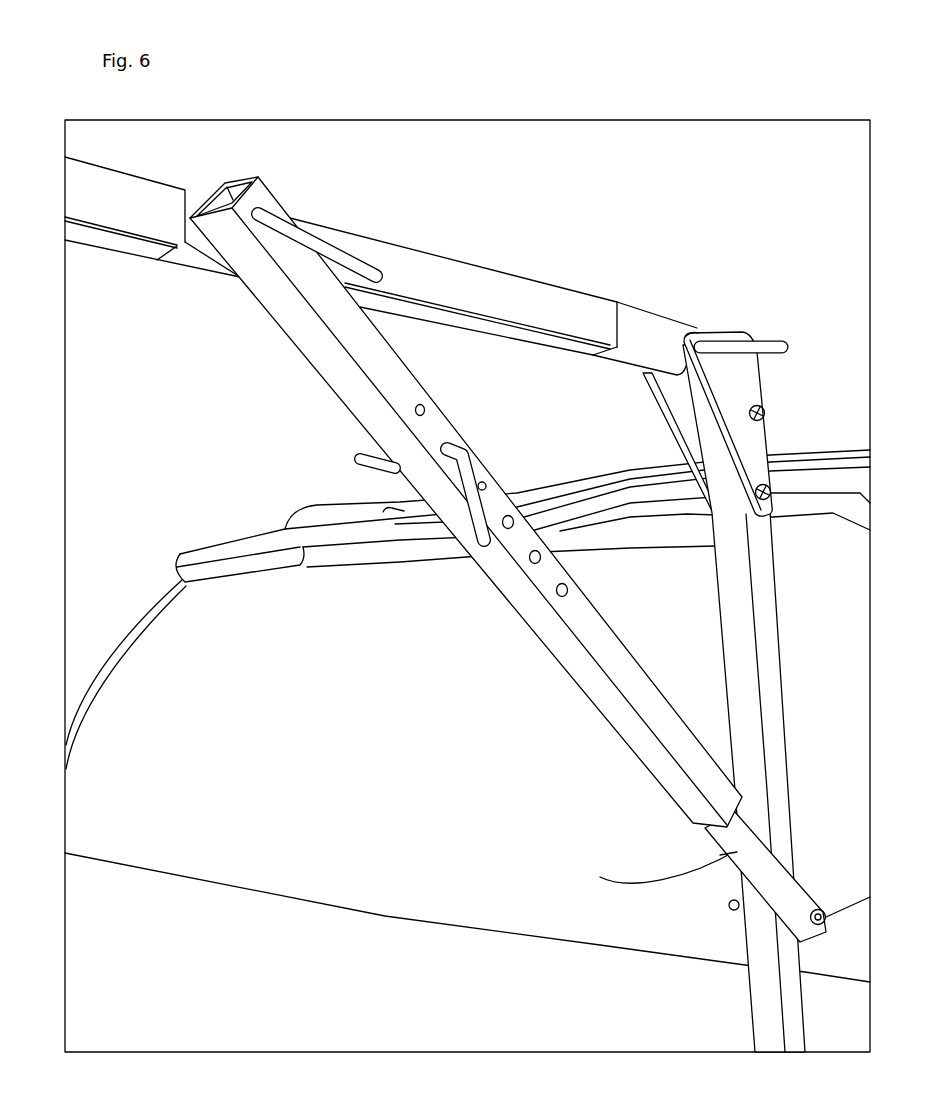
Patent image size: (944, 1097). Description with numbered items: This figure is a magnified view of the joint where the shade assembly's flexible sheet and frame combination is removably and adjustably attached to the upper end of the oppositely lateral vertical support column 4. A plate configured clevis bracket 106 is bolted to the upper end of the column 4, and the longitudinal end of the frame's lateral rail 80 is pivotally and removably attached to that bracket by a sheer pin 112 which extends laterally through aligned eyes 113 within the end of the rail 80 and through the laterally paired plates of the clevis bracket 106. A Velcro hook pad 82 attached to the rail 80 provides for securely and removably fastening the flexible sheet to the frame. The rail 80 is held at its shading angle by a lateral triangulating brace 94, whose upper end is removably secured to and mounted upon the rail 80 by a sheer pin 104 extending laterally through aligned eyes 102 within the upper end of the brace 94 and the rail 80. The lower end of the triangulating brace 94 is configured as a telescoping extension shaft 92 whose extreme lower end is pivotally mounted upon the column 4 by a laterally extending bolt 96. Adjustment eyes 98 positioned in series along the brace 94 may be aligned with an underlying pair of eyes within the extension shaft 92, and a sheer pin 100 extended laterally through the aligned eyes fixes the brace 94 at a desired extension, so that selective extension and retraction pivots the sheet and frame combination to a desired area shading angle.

The oppositely lateral vertical support column 4 is at (763, 618).
The lateral rail 80 is at (645, 318).
The Velcro hook pad 82 is at (535, 303).
The telescoping extension shaft 92 is at (735, 851).
The lateral triangulating brace 94 is at (448, 429).
The laterally extending bolt 96 is at (824, 917).
The adjustment eyes 98 is at (420, 403).
The sheer pin 100 is at (365, 455).
The aligned eyes 102 is at (272, 196).
The sheer pin 104 is at (340, 252).
The clevis bracket 106 is at (753, 377).
The sheer pin 112 is at (743, 340).
The aligned eyes 113 is at (690, 333).